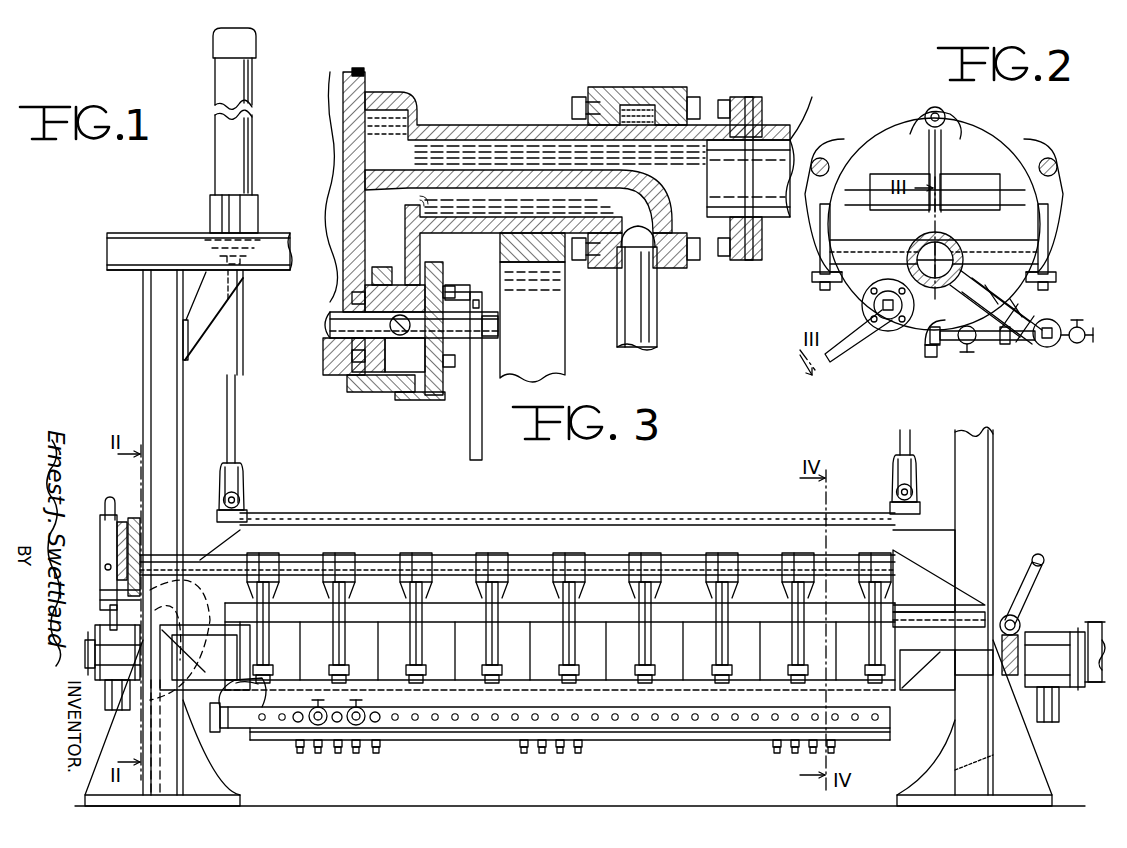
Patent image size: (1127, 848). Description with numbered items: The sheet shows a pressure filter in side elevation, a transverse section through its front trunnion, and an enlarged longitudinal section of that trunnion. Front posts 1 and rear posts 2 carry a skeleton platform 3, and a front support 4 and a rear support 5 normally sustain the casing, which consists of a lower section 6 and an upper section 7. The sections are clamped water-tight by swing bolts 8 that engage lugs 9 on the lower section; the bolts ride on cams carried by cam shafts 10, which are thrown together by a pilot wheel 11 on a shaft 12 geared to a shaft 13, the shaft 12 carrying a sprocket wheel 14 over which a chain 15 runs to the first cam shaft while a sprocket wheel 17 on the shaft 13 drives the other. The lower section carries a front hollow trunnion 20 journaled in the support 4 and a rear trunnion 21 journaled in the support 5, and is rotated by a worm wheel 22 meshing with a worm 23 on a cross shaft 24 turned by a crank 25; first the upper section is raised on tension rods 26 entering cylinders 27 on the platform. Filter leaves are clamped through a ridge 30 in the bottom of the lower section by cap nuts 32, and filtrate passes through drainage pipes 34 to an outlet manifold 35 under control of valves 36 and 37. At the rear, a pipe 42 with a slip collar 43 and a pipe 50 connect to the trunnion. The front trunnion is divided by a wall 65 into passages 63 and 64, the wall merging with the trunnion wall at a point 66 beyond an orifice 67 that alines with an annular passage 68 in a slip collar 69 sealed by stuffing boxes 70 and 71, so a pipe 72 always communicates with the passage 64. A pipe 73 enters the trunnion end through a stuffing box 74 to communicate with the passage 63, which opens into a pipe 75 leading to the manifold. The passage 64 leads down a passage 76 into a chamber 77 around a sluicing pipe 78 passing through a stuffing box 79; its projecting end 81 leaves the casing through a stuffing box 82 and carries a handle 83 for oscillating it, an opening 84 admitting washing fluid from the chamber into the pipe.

In FIG. 1, the front uprights or posts 1 is at (159, 371).
In FIG. 1, the rear posts 2 is at (978, 468).
In FIG. 1, the skeleton platform 3 is at (183, 248).
In FIG. 1, the support 4 is at (178, 718).
In FIG. 3, the support 4 is at (500, 238).
In FIG. 1, the support 5 is at (968, 670).
In FIG. 1, the lower section 6 is at (612, 683).
In FIG. 1, the upper section 7 is at (648, 527).
In FIG. 1, the swing bolts 8 is at (270, 636).
In FIG. 2, the swing bolts 8 is at (1050, 225).
In FIG. 1, the lugs 9 is at (266, 658).
In FIG. 2, the lugs 9 is at (934, 266).
In FIG. 1, the shafts 10 is at (527, 562).
In FIG. 2, the shafts 10 is at (822, 160).
In FIG. 1, the pilot wheel 11 is at (122, 530).
In FIG. 1, the shaft 12 is at (112, 560).
In FIG. 1, the shaft 13 is at (122, 522).
In FIG. 1, the sprocket wheel 14 is at (125, 589).
In FIG. 1, the chain 15 is at (118, 600).
In FIG. 1, the sprocket wheel 17 is at (140, 524).
In FIG. 1, the hollow gudgeon or trunnion 20 is at (190, 655).
In FIG. 3, the hollow gudgeon or trunnion 20 is at (445, 124).
In FIG. 1, the hollow gudgeon or trunnion 21 is at (945, 680).
In FIG. 1, the worm wheel 22 is at (1020, 700).
In FIG. 1, the worm 23 is at (1020, 627).
In FIG. 1, the cross shaft 24 is at (1010, 614).
In FIG. 1, the crank 25 is at (1028, 588).
In FIG. 1, the rods or tension members 26 is at (234, 435).
In FIG. 1, the steam or hydraulic cylinders 27 is at (224, 146).
In FIG. 1, the ridge 30 is at (483, 742).
In FIG. 1, the cap nut 32 is at (375, 754).
In FIG. 2, the drainage pipe 34 is at (1000, 342).
In FIG. 1, the outlet manifold 35 is at (420, 720).
In FIG. 2, the outlet manifold 35 is at (1055, 322).
In FIG. 1, the valve 36 is at (345, 704).
In FIG. 2, the valve 36 is at (1088, 328).
In FIG. 2, the valve 37 is at (966, 355).
In FIG. 1, the pipe 42 is at (1055, 712).
In FIG. 1, the slip collar 43 is at (1055, 659).
In FIG. 1, the pipe 50 is at (1105, 642).
In FIG. 3, the passage 63 is at (486, 155).
In FIG. 2, the passage 63 is at (915, 242).
In FIG. 3, the passage 64 is at (520, 200).
In FIG. 2, the passage 64 is at (934, 274).
In FIG. 3, the wall 65 is at (463, 183).
In FIG. 2, the wall 65 is at (950, 277).
In FIG. 3, the point 66 is at (662, 222).
In FIG. 3, the orifice 67 is at (630, 226).
In FIG. 3, the annular passage 68 is at (638, 86).
In FIG. 1, the slip collar 69 is at (112, 652).
In FIG. 3, the slip collar 69 is at (670, 88).
In FIG. 3, the stuffing box 70 is at (578, 97).
In FIG. 3, the stuffing box 71 is at (704, 96).
In FIG. 1, the pipe 72 is at (112, 700).
In FIG. 3, the pipe 72 is at (657, 320).
In FIG. 1, the pipe 73 is at (117, 625).
In FIG. 3, the pipe 73 is at (768, 170).
In FIG. 3, the stuffing box 74 is at (778, 112).
In FIG. 1, the pipe 75 is at (240, 695).
In FIG. 3, the pipe 75 is at (382, 150).
In FIG. 2, the pipe 75 is at (1000, 292).
In FIG. 3, the downwardly-extending passage 76 is at (384, 245).
In FIG. 3, the chamber 77 is at (403, 328).
In FIG. 3, the sluicing pipe 78 is at (335, 313).
In FIG. 3, the stuffing box 79 is at (380, 394).
In FIG. 3, the projecting end 81 is at (462, 326).
In FIG. 3, the stuffing box 82 is at (458, 288).
In FIG. 2, the stuffing box 82 is at (862, 304).
In FIG. 3, the handle 83 is at (470, 428).
In FIG. 2, the handle 83 is at (858, 342).
In FIG. 3, the opening 84 is at (327, 331).